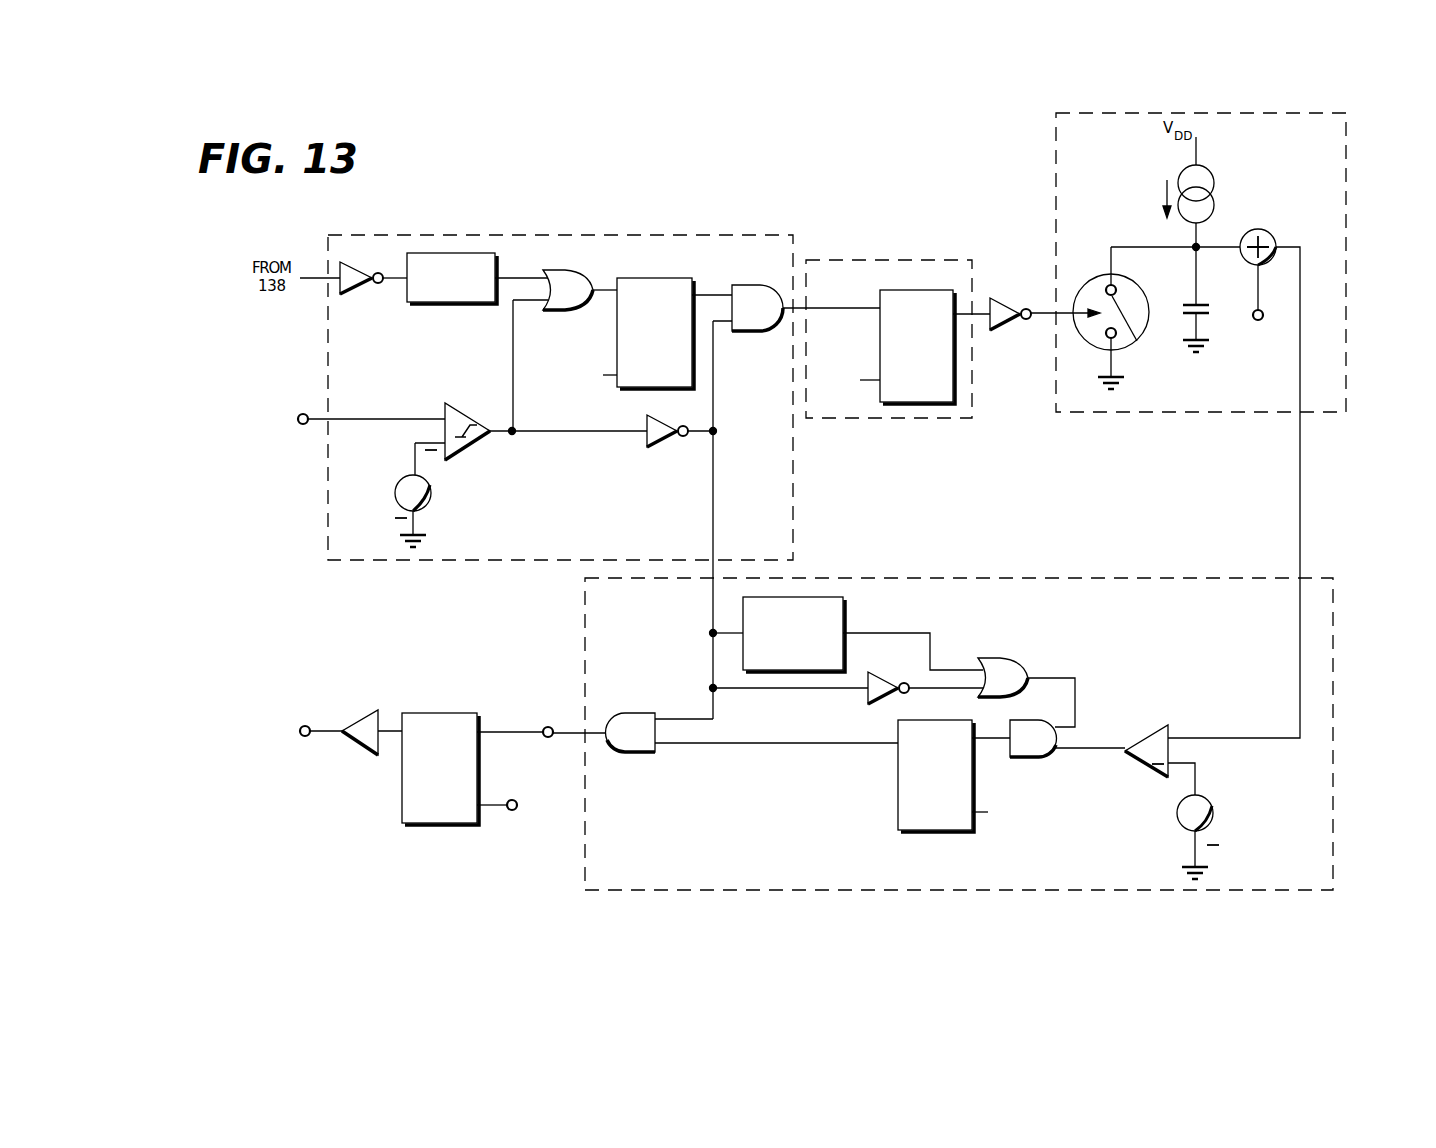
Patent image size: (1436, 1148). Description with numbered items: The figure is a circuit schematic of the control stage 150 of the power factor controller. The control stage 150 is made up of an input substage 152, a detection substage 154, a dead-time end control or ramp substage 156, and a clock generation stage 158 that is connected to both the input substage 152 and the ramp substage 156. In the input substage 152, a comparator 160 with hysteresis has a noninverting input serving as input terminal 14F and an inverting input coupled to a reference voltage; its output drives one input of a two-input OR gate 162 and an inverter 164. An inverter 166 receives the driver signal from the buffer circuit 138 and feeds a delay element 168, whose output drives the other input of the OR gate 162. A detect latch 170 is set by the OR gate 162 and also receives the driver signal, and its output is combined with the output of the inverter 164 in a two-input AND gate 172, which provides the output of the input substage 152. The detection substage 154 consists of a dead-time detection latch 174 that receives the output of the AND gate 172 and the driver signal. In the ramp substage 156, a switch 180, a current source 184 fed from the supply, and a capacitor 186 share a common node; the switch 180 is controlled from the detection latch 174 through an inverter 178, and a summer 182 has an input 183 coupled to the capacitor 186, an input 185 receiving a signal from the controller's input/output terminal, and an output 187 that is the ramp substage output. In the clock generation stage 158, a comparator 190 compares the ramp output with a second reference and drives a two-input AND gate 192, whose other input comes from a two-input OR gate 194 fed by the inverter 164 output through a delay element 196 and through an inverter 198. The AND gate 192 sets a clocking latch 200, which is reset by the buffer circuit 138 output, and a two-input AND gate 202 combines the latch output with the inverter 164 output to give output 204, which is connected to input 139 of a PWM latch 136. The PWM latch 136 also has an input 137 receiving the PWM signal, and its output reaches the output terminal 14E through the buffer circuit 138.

The control stage 150 is at (285, 211).
The input substage 152 is at (530, 235).
The detection substage 154 is at (872, 260).
The dead-time end control substage 156 is at (1346, 240).
The clock generation stage 158 is at (963, 578).
The inverter 166 is at (360, 291).
The delay element 168 is at (448, 305).
The two-input OR gate 162 is at (560, 312).
The detect latch 170 is at (650, 278).
The two-input AND gate 172 is at (757, 285).
The comparator 160 is at (470, 446).
The inverter 164 is at (665, 445).
The input terminal 14F is at (299, 415).
The dead-time detection latch 174 is at (894, 290).
The inverter 178 is at (1008, 327).
The current source 184 is at (1214, 180).
The input of summer 183 is at (1222, 247).
The summer 182 is at (1260, 229).
The output of summer 187 is at (1300, 304).
The capacitor 186 is at (1185, 303).
The input of summer 185 is at (1256, 292).
The switch 180 is at (1143, 346).
The delay element 196 is at (846, 613).
The inverter 198 is at (870, 708).
The two-input OR gate 194 is at (1008, 658).
The two-input AND gate 192 is at (1038, 760).
The comparator 190 is at (1148, 768).
The clocking latch 200 is at (912, 836).
The two-input AND gate 202 is at (638, 754).
The output of AND gate 204 is at (546, 726).
The input of PWM latch 139 is at (492, 734).
The PWM latch 136 is at (430, 713).
The input of PWM latch 137 is at (515, 810).
The buffer circuit 138 is at (355, 716).
The output terminal 14E is at (300, 736).